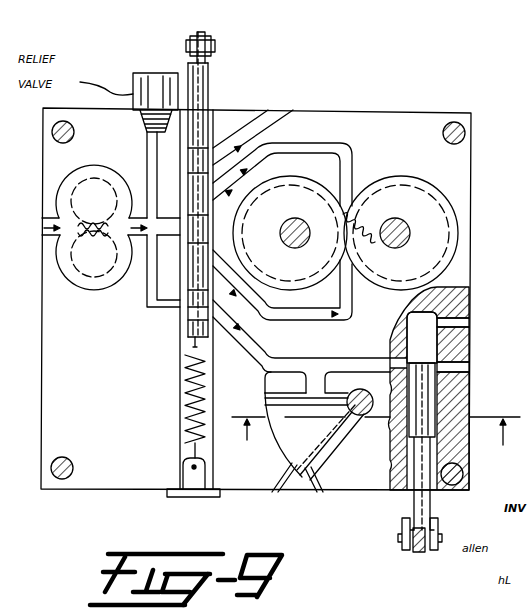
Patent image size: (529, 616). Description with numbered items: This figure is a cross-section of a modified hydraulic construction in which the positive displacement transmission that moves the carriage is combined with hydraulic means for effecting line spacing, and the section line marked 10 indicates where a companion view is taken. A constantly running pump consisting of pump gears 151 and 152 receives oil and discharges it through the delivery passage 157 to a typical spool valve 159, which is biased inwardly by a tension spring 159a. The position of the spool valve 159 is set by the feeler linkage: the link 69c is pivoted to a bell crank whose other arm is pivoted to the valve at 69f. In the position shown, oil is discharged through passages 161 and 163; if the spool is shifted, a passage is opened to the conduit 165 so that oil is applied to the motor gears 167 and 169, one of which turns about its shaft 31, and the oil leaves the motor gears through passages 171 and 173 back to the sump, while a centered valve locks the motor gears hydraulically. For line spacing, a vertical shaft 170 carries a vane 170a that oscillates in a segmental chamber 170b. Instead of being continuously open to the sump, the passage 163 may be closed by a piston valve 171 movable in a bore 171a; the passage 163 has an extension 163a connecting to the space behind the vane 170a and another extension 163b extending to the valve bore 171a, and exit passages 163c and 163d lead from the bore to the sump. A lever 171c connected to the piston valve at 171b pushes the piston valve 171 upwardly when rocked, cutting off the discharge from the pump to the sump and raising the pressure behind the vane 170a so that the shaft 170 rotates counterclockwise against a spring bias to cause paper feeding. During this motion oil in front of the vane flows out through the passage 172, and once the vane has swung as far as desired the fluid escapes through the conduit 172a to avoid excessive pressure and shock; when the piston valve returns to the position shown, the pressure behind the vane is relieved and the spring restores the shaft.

The section line 10- 10 is at (373, 434).
The gear shaft 31 is at (404, 226).
The link 69c is at (207, 38).
The pivot of bell crank arm to valve 69f is at (215, 48).
The pump gear 151 is at (92, 165).
The pump gear 152 is at (90, 279).
The delivery passage 157 is at (135, 219).
The spool valve 159 is at (210, 86).
The tension spring 159a is at (184, 415).
The discharge passage 161 is at (170, 310).
The discharge passage 163 is at (258, 345).
The extension of passage 163 163a is at (313, 381).
The extension of passage 163 163b is at (362, 360).
The exit passage 163c is at (470, 366).
The exit passage 163d is at (470, 323).
The conduit 165 is at (333, 314).
The motor gear 167 is at (290, 233).
The motor gear 169 is at (401, 233).
The vertical shaft 170 is at (360, 412).
The vane 170a is at (285, 404).
The segmental chamber 170b is at (278, 435).
The piston valve 171 is at (280, 144).
The bore 171a is at (422, 337).
The connection of lever to piston valve 171b is at (404, 534).
The lever 171c is at (430, 552).
The passage 172 is at (318, 492).
The conduit 172a is at (273, 492).
The discharge passage 173 is at (266, 112).